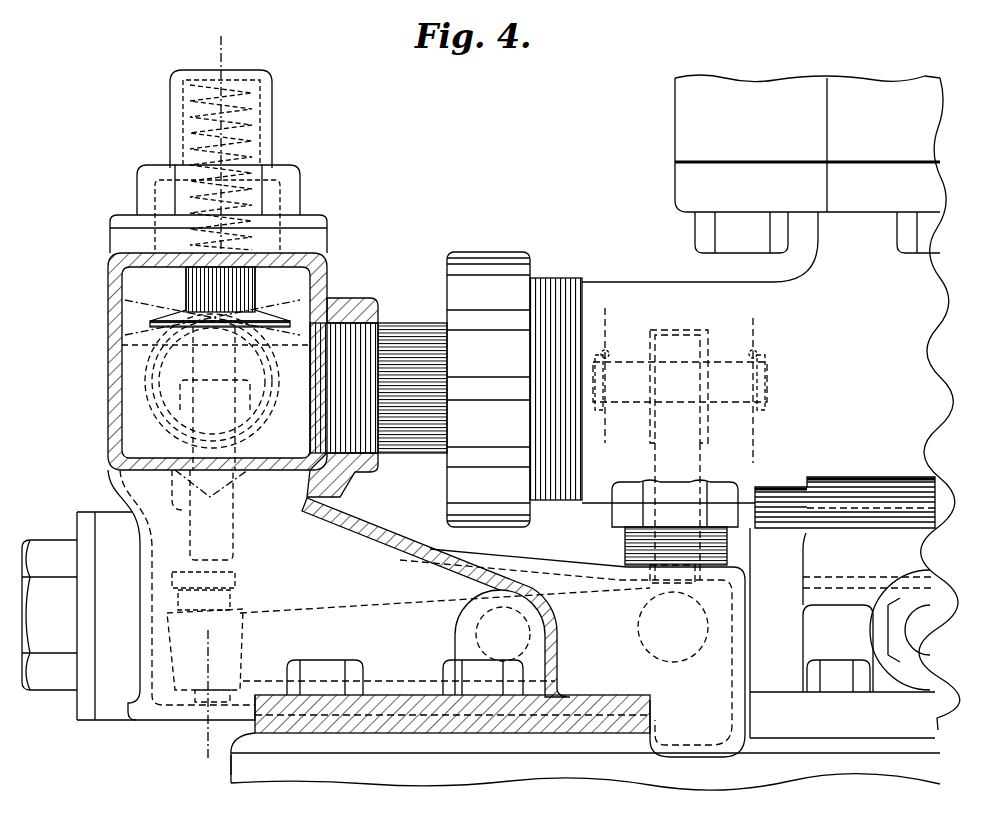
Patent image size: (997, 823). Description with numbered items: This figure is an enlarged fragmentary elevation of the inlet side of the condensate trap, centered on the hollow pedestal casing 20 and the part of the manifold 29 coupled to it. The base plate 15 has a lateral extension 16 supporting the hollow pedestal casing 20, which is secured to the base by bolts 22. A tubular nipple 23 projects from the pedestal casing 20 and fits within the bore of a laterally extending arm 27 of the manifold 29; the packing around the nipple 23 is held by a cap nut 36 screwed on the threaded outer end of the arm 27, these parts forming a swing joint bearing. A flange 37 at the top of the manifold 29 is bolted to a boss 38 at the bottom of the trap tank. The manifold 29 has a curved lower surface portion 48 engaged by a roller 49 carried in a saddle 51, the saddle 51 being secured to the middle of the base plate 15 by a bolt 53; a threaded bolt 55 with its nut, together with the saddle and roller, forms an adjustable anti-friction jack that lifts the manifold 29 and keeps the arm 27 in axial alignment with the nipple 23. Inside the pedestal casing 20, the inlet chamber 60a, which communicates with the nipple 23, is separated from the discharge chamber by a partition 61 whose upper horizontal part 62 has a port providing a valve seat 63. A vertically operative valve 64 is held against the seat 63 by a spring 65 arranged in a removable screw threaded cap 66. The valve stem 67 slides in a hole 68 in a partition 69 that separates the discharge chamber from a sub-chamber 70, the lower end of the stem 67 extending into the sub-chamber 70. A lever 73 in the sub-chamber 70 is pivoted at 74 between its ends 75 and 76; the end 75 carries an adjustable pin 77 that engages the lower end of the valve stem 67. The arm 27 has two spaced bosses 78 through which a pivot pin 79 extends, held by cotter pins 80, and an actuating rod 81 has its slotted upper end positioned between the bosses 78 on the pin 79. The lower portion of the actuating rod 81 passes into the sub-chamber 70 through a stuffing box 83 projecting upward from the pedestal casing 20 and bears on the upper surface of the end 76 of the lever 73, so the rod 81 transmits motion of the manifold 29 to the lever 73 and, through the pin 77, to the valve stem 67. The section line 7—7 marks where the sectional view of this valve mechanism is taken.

The section line 7— 7 is at (245, 32).
The base plate 15 is at (913, 777).
The lateral extension 16 is at (240, 773).
The hollow pedestal casing 20 is at (523, 566).
The bolts 22 is at (453, 667).
The nipple 23 is at (415, 447).
The arm 27 is at (686, 296).
The manifold 29 is at (925, 274).
The cap nut 36 is at (458, 293).
The flange 37 is at (938, 182).
The boss 38 is at (925, 108).
The lower surface portion 48 is at (875, 508).
The roller 49 is at (850, 477).
The saddle 51 is at (755, 710).
The bolts 53 is at (810, 673).
The bolt 55 is at (897, 628).
The chamber 60a is at (128, 395).
The partition 61 is at (127, 347).
The upper horizontal part 62 is at (145, 325).
The valve seat 63 is at (272, 328).
The valve 64 is at (272, 318).
The spring 65 is at (243, 155).
The screw threaded cap 66 is at (272, 135).
The valve stem 67 is at (235, 542).
The hole 68 is at (190, 494).
The partition 69 is at (175, 500).
The sub-chamber 70 is at (352, 552).
The lever 73 is at (385, 598).
The pivot 74 is at (503, 614).
The end 75 is at (168, 635).
The end 76 is at (678, 662).
The adjustable pin 77 is at (233, 578).
The bosses 78 is at (757, 344).
The pivot pin 79 is at (767, 376).
The cotter pins 80 is at (605, 352).
The actuating rod 81 is at (700, 466).
The stuffing box 83 is at (627, 540).